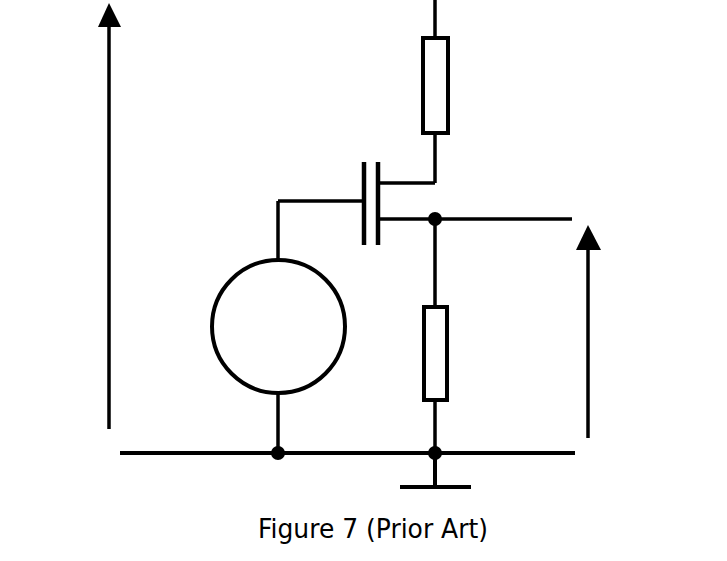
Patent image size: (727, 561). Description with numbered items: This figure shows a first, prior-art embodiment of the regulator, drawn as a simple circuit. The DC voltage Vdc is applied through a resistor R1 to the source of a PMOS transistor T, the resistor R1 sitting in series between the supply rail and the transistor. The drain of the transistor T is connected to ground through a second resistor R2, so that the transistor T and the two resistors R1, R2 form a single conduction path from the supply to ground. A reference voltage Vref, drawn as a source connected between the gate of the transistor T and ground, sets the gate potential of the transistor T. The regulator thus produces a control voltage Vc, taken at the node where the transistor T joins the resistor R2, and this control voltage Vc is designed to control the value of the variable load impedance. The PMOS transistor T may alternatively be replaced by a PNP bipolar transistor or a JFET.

The DC voltage Vdc is at (81, 216).
The reference voltage Vref is at (278, 327).
The PMOS transistor T is at (425, 189).
The resistor R1 is at (455, 66).
The resistor R2 is at (456, 336).
The control voltage Vc is at (602, 331).